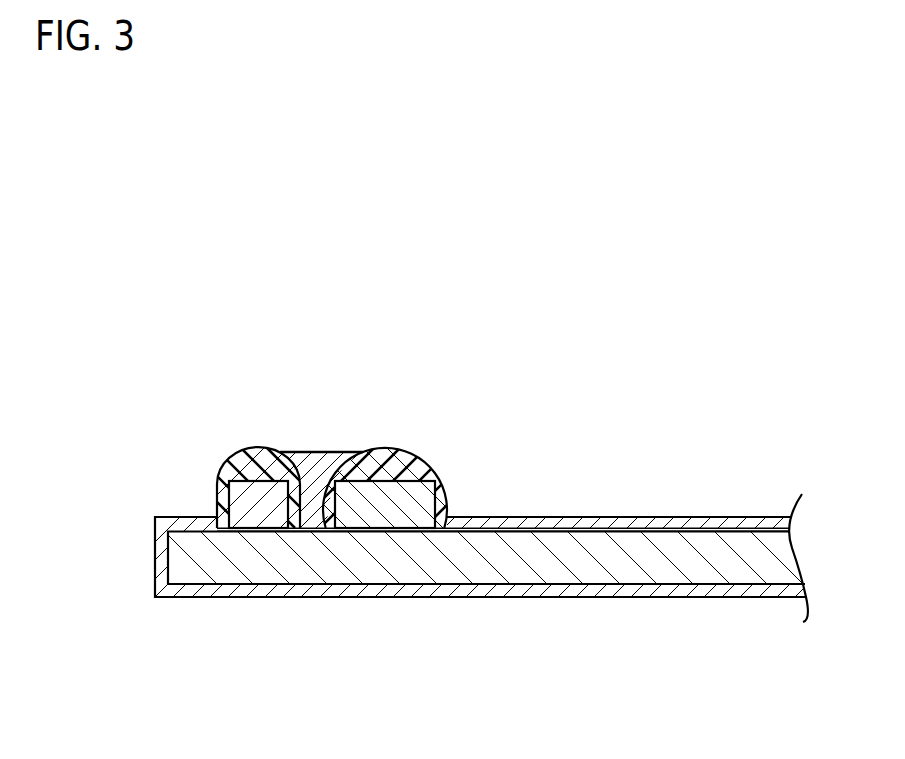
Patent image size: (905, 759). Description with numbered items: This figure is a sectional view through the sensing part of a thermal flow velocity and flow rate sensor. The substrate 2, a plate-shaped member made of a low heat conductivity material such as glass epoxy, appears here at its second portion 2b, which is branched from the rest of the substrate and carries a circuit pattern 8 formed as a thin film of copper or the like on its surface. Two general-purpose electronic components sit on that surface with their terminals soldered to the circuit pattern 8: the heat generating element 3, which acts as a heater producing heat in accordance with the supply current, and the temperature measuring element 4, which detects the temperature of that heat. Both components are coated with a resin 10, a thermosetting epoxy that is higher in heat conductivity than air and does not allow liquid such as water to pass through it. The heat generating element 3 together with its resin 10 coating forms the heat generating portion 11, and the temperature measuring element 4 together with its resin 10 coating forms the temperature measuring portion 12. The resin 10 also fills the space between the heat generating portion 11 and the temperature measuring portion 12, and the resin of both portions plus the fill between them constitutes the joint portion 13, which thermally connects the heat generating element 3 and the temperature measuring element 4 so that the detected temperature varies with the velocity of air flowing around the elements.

The substrate 2 is at (497, 516).
The second portion 2b is at (507, 560).
The heat generating element 3 is at (257, 498).
The temperature measuring element 4 is at (390, 498).
The circuit pattern 8 is at (633, 530).
The resin 10 is at (257, 462).
The heat generating portion 11 is at (220, 453).
The temperature measuring portion 12 is at (440, 453).
The joint portion 13 is at (248, 378).